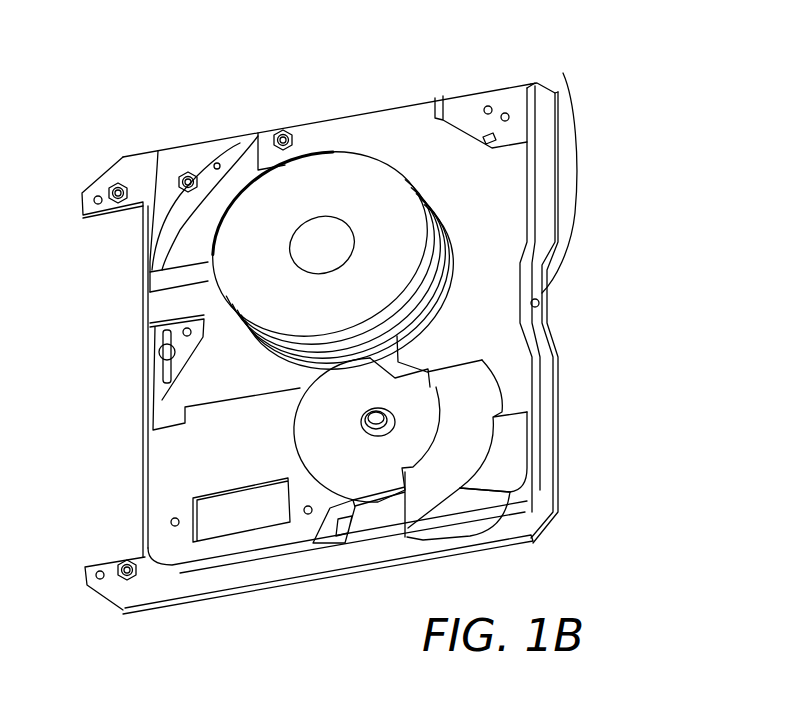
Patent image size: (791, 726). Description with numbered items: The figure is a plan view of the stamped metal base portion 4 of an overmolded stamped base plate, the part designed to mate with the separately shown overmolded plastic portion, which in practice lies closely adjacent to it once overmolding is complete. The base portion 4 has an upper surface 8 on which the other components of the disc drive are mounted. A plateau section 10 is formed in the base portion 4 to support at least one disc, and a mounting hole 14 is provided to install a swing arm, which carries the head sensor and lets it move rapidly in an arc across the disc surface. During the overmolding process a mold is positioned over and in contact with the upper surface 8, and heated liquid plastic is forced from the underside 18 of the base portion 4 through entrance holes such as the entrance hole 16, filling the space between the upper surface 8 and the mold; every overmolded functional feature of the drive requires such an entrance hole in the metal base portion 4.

The stamped metal base portion 4 is at (158, 152).
The upper surface 8 is at (135, 593).
The plateau section 10 is at (323, 177).
The mounting hole 14 is at (372, 440).
The entrance hole 16 is at (509, 117).
The underside 18 is at (462, 560).